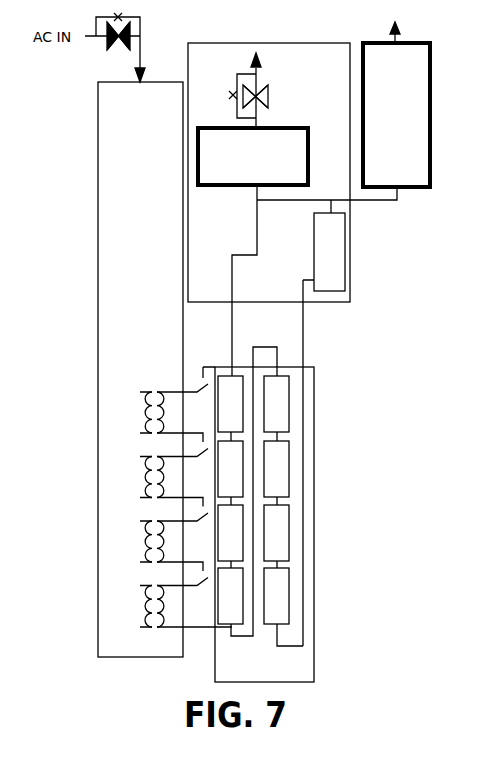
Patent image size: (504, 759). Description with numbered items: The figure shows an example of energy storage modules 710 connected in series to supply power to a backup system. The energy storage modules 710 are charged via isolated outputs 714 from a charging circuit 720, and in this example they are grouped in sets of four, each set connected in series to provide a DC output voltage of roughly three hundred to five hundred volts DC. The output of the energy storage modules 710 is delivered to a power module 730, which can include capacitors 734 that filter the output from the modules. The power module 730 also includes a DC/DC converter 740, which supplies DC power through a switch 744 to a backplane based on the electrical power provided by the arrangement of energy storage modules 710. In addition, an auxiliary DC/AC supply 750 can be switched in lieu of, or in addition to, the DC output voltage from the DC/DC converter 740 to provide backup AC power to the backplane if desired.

The energy storage modules 710 is at (316, 408).
The isolated outputs 714 is at (160, 374).
The charging circuit 720 is at (98, 283).
The power module 730 is at (352, 245).
The capacitors 734 is at (313, 245).
The DC/DC converter 740 is at (278, 128).
The switch 744 is at (268, 101).
The auxiliary DC/AC supply 750 is at (432, 118).